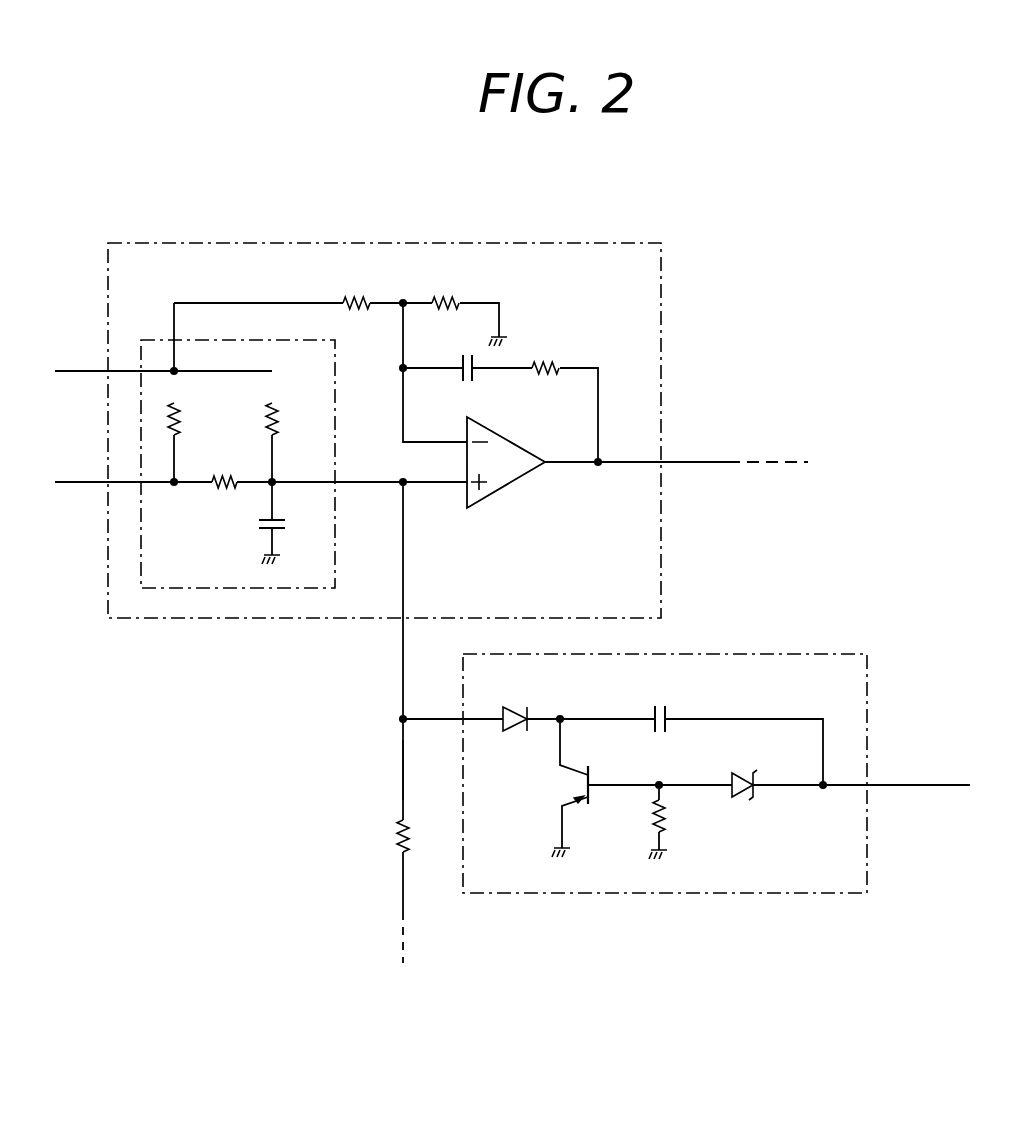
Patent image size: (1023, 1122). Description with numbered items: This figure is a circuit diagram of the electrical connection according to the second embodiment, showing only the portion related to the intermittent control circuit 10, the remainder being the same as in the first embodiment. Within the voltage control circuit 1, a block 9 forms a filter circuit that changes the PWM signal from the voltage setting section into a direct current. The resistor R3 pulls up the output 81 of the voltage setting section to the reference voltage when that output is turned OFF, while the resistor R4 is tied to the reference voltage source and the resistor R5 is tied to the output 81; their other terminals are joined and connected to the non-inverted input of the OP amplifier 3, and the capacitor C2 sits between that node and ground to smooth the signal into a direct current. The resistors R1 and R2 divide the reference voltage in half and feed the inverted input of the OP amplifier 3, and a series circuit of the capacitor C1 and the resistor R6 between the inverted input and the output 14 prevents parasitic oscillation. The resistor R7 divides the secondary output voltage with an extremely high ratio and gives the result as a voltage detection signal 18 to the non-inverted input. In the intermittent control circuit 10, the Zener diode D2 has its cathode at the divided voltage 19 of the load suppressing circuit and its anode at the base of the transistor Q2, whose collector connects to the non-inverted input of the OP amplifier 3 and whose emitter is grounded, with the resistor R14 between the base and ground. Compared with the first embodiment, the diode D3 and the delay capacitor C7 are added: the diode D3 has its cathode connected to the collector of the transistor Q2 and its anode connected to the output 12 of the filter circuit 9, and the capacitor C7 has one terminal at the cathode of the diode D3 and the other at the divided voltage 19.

The voltage control circuit 1 is at (354, 242).
The filter circuit 9 is at (156, 338).
The OP amplifier 3 is at (547, 464).
The output of the filter circuit 12 is at (367, 487).
The output of the OP amplifier 14 is at (703, 464).
The output of the voltage setting section 81 is at (81, 485).
The intermittent control circuit 10 is at (840, 653).
The voltage detection signal 18 is at (401, 774).
The divided voltage 19 is at (940, 783).
The resistor R1 is at (357, 287).
The resistor R2 is at (445, 287).
The resistor R3 is at (194, 420).
The resistor R4 is at (293, 420).
The resistor for a filter R5 is at (224, 501).
The resistor R6 is at (544, 352).
The resistor R7 is at (378, 838).
The resistor R14 is at (687, 818).
The capacitor C1 is at (444, 383).
The capacitor for a filter C2 is at (289, 510).
The capacitor for delay C7 is at (660, 702).
The Zener diode D2 is at (763, 804).
The diode D3 is at (515, 702).
The transistor Q2 is at (552, 796).